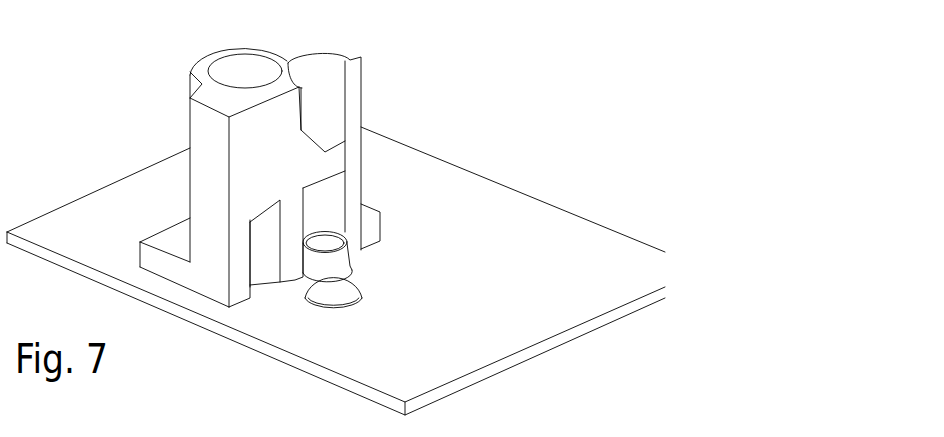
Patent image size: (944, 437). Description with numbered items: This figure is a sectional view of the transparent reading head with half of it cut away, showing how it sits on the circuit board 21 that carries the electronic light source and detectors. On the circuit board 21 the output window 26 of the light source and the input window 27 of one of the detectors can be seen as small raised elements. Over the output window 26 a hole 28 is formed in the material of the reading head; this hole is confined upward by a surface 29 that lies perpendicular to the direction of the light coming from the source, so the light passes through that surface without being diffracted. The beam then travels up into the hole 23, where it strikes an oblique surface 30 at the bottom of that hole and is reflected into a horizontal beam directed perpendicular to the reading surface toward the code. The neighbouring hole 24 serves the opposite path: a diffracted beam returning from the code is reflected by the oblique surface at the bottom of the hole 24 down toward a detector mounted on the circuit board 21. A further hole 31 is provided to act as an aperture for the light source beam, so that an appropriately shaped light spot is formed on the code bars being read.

The circuit board 21 is at (597, 245).
The hole 23 is at (322, 90).
The hole 24 is at (238, 73).
The output window 26 is at (322, 242).
The input window 27 is at (337, 288).
The hole 28 is at (322, 210).
The surface 29 is at (318, 182).
The oblique surface 30 is at (320, 147).
The hole 31 is at (263, 240).